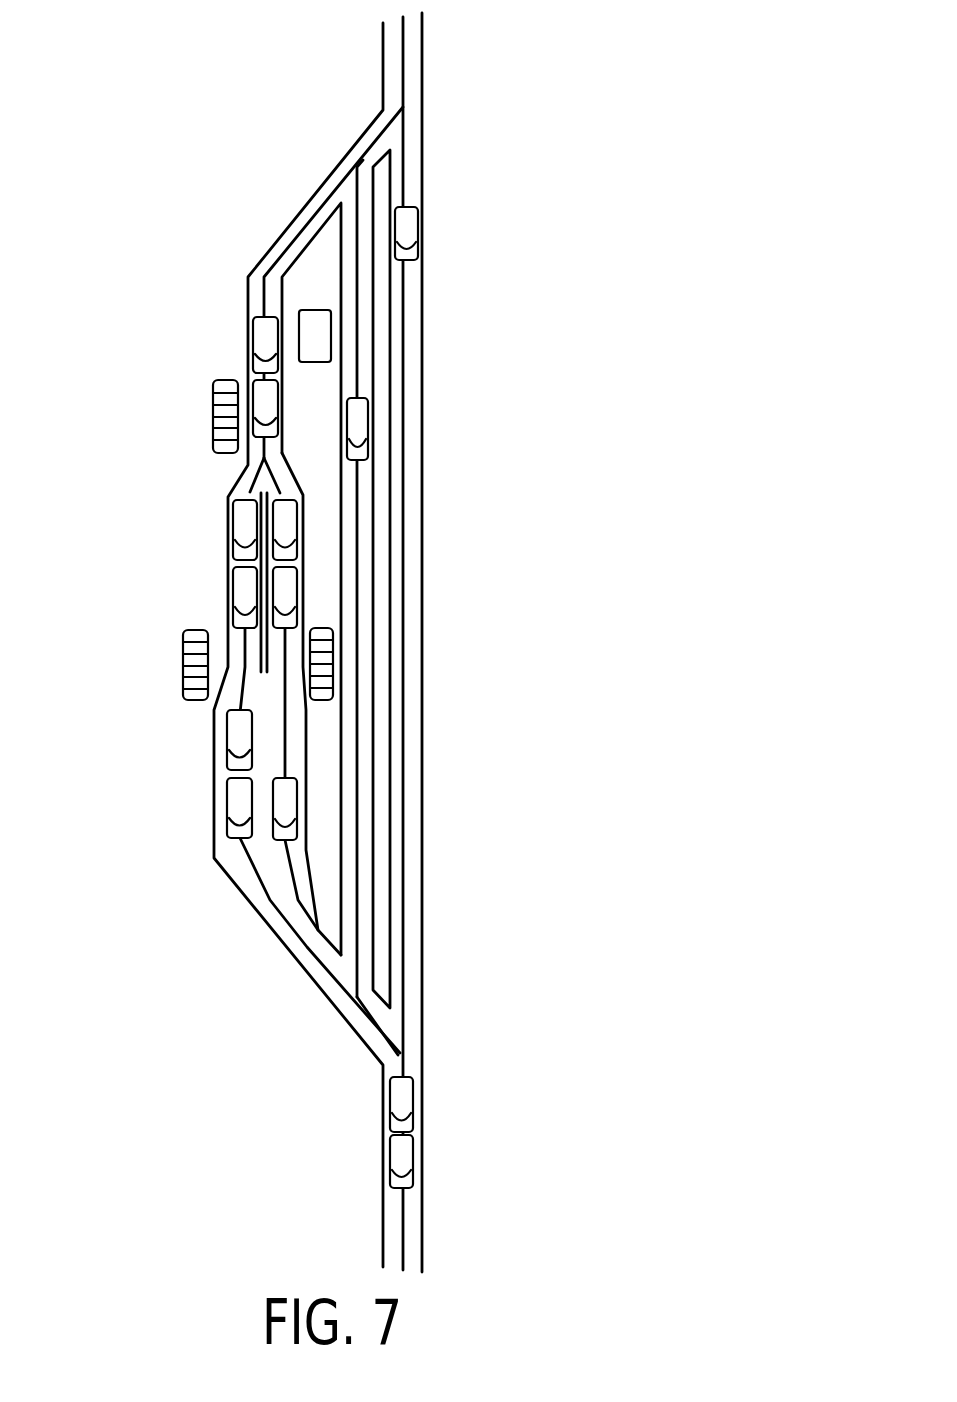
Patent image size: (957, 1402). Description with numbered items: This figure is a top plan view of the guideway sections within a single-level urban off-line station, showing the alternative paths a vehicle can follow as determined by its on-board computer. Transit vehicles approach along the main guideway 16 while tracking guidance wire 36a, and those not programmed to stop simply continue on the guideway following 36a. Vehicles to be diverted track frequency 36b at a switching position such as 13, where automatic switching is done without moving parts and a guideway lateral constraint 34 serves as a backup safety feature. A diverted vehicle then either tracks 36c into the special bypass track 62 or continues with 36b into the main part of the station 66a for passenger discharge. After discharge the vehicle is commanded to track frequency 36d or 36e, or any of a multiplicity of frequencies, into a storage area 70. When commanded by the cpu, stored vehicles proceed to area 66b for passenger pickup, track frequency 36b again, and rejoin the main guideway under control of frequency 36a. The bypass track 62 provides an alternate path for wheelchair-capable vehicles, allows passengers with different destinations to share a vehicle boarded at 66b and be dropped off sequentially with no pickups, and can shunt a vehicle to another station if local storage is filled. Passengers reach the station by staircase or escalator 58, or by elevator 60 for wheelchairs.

The switching position 13 is at (393, 1018).
The main guideway 16 is at (412, 475).
The lateral constraint 34 is at (310, 972).
The guidance wire 36a is at (407, 735).
The guidance wire frequency 36b is at (368, 153).
The bypass guidance frequency 36c is at (360, 323).
The storage guidance frequency 36d is at (252, 482).
The storage guidance frequency 36e is at (275, 483).
The staircase or escalator 58 is at (220, 387).
The elevator 60 is at (310, 323).
The special bypass track 62 is at (344, 228).
The passenger discharge area 66a is at (248, 338).
The passenger pickup area 66b is at (212, 815).
The storage area 70 is at (232, 557).